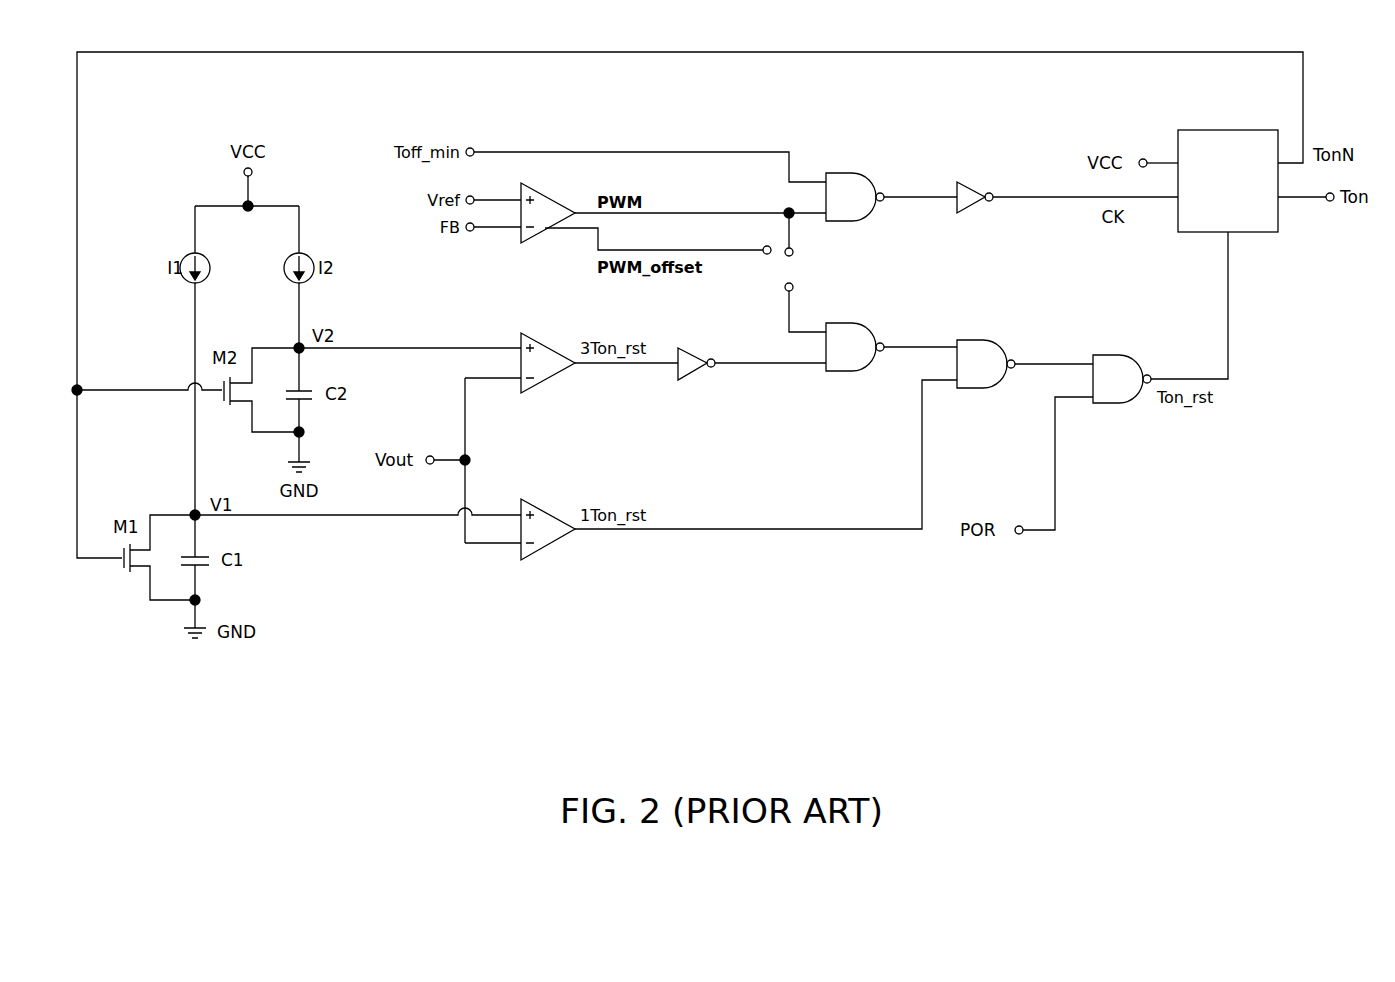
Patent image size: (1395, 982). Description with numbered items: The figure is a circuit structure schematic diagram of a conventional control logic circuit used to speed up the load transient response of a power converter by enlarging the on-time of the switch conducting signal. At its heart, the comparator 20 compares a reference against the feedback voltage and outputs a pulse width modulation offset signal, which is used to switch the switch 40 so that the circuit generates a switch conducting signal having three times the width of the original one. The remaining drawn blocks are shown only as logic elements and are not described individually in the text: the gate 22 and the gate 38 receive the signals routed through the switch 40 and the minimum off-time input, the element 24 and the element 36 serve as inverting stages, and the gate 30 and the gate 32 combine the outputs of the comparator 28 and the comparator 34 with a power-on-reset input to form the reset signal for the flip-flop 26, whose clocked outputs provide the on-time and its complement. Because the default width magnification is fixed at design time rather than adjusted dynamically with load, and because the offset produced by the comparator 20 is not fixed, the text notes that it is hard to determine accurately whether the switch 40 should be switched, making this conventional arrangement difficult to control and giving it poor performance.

The comparator 20 is at (533, 245).
The NAND gate 22 is at (858, 173).
The inverter 24 is at (975, 185).
The D flip-flop 26 is at (1197, 232).
The comparator 28 is at (550, 545).
The NAND gate 30 is at (985, 340).
The NAND gate 32 is at (1112, 405).
The comparator 34 is at (550, 378).
The inverter 36 is at (695, 375).
The NAND gate 38 is at (855, 323).
The switch 40 is at (770, 277).